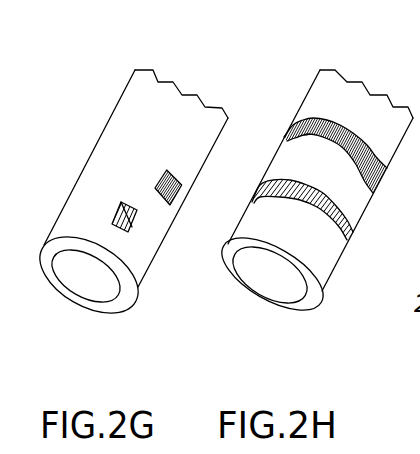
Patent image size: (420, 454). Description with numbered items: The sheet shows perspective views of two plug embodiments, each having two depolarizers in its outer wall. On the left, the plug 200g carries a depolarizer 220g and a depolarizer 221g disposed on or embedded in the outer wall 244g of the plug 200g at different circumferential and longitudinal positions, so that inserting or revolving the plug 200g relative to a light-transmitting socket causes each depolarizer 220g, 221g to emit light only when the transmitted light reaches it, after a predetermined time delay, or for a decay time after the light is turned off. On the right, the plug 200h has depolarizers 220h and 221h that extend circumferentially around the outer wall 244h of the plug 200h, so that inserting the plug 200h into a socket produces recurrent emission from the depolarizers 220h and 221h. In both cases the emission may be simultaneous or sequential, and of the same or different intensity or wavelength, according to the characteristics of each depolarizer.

In FIG. 2G, the plug 200g is at (116, 70).
In FIG. 2G, the depolarizer 221g is at (165, 171).
In FIG. 2G, the depolarizer 220g is at (120, 203).
In FIG. 2G, the outer wall 244g is at (44, 233).
In FIG. 2H, the plug 200h is at (298, 76).
In FIG. 2H, the depolarizer 221h is at (387, 176).
In FIG. 2H, the depolarizer 220h is at (352, 237).
In FIG. 2H, the outer wall 244h is at (327, 291).